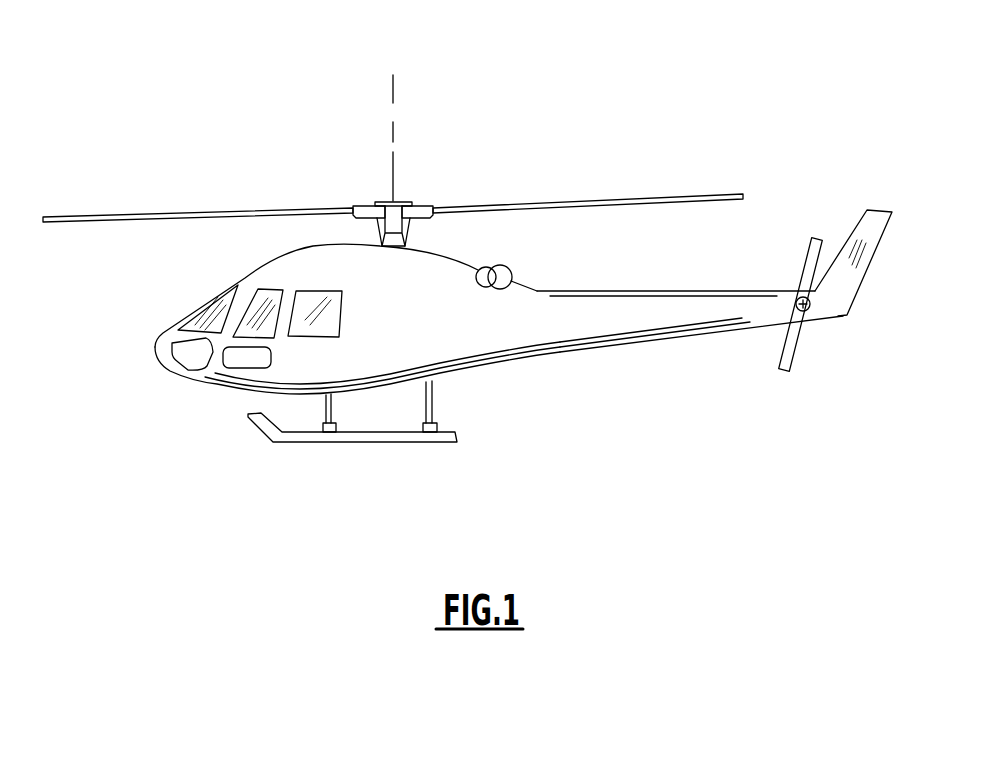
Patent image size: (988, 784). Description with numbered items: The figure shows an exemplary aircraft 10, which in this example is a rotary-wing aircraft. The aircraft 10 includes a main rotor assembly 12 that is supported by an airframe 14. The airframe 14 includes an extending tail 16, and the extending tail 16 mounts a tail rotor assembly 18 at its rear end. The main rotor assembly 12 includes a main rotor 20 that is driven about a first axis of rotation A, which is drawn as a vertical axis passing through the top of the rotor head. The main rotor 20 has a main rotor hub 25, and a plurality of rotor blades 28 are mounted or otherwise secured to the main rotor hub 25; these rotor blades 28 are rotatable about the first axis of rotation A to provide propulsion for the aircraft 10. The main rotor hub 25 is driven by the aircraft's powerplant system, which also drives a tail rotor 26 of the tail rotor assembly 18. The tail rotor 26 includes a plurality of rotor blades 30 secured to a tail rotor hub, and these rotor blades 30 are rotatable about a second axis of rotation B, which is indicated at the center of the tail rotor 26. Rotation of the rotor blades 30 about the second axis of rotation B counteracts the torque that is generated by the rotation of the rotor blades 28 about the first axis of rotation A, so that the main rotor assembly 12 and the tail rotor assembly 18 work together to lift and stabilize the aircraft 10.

The aircraft 10 is at (135, 102).
The main rotor assembly 12 is at (343, 188).
The airframe 14 is at (243, 380).
The extending tail 16 is at (622, 328).
The tail rotor assembly 18 is at (833, 210).
The main rotor 20 is at (411, 202).
The main rotor hub 25 is at (412, 223).
The tail rotor 26 is at (797, 305).
The rotor blades 28 is at (128, 214).
The rotor blades 30 is at (808, 243).
The first axis of rotation A is at (393, 103).
The second axis of rotation B is at (810, 304).